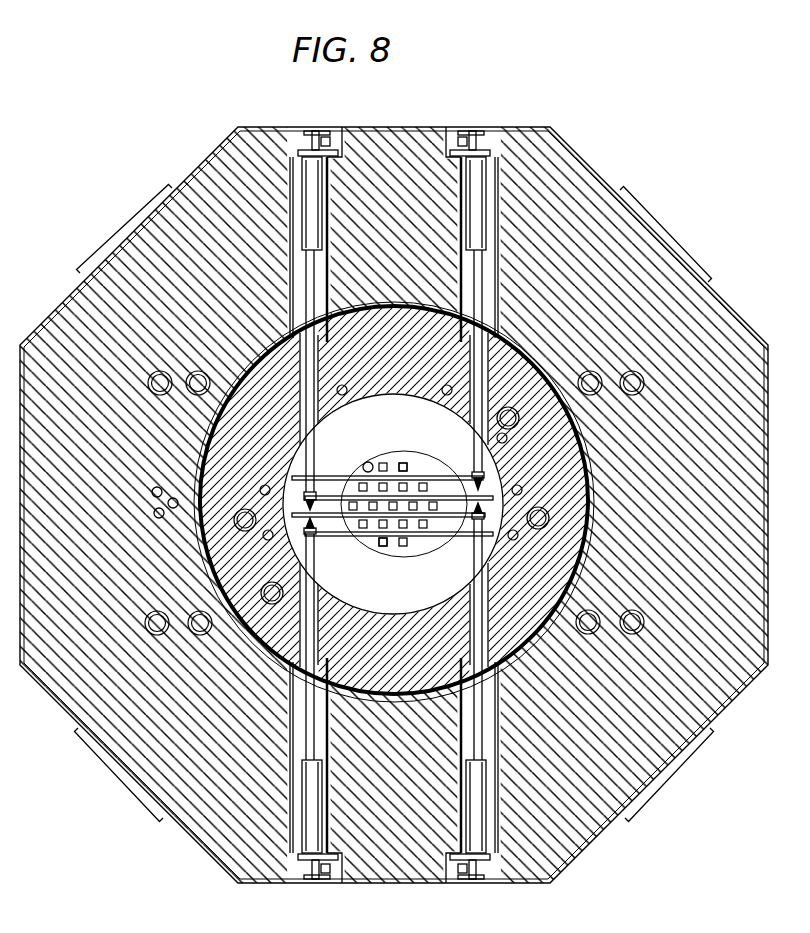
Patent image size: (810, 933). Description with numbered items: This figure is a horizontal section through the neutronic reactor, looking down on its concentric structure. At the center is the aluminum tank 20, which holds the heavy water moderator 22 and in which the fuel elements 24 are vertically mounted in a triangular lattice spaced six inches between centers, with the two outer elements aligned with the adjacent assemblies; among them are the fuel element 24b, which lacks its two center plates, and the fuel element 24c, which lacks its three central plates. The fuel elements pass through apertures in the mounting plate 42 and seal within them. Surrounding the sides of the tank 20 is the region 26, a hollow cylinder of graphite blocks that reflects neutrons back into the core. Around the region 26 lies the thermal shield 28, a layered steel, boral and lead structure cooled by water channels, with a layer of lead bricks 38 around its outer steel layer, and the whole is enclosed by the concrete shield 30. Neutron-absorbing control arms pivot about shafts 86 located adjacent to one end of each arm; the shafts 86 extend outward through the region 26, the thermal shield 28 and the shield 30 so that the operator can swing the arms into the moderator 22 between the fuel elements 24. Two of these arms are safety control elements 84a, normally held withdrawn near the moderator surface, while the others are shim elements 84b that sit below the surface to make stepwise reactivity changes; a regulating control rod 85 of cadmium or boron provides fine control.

The tank 20 is at (424, 401).
The heavy water moderator 22 is at (404, 447).
The fuel elements 24 is at (428, 488).
The fuel element 24b is at (406, 464).
The fuel element 24c is at (401, 547).
The region 26 is at (404, 662).
The thermal shield 28 is at (574, 573).
The concrete shield 30 is at (404, 782).
The lead bricks 38 is at (200, 537).
The mounting plate 42 is at (385, 548).
The safety control elements 84a is at (338, 483).
The shim elements 84b is at (476, 480).
The regulating control rod 85 is at (364, 467).
The shaft 86 is at (313, 288).